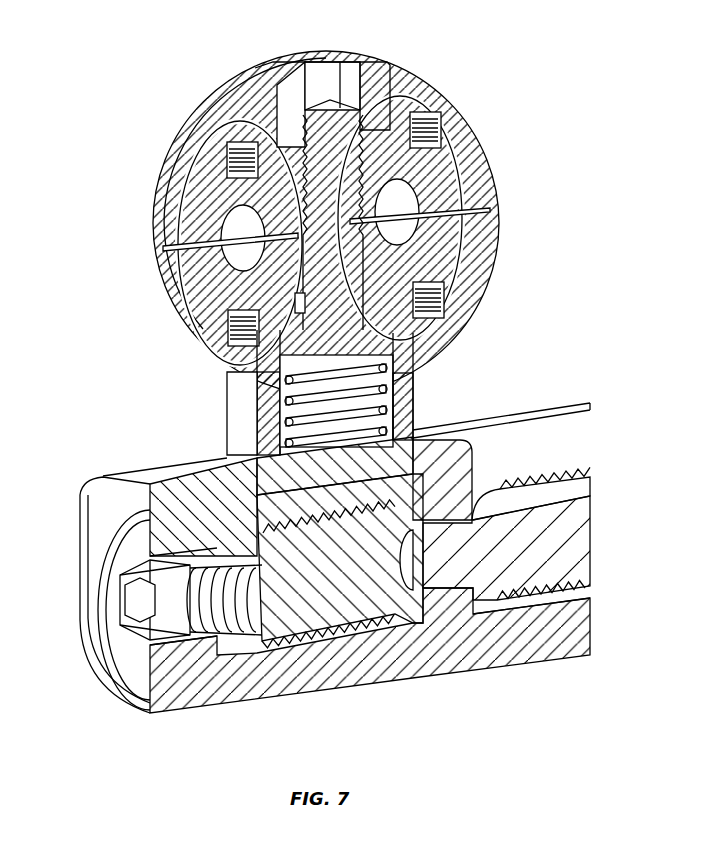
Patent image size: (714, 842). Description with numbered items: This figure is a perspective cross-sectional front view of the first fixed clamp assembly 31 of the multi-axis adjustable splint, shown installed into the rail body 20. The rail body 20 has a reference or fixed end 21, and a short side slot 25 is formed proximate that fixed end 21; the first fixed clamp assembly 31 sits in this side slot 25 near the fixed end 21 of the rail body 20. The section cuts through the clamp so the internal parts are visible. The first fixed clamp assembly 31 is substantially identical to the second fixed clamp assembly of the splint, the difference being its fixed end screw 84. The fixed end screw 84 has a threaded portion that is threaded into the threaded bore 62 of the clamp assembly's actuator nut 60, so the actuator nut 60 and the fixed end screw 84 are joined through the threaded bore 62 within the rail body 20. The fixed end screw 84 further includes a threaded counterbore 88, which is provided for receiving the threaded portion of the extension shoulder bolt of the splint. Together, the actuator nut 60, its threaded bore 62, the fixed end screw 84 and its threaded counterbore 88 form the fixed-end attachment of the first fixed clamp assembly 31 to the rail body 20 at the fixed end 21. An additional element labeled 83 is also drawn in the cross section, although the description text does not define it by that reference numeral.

The first fixed clamp assembly 31 is at (206, 49).
The rail body 20 is at (567, 402).
The actuator nut 60 is at (414, 426).
The side slot 25 is at (235, 459).
The fixed end screw 84 is at (120, 552).
The threaded counterbore 88 is at (200, 604).
The fixed end 21 is at (98, 688).
The threaded rod 83 is at (341, 660).
The threaded bore 62 is at (411, 566).